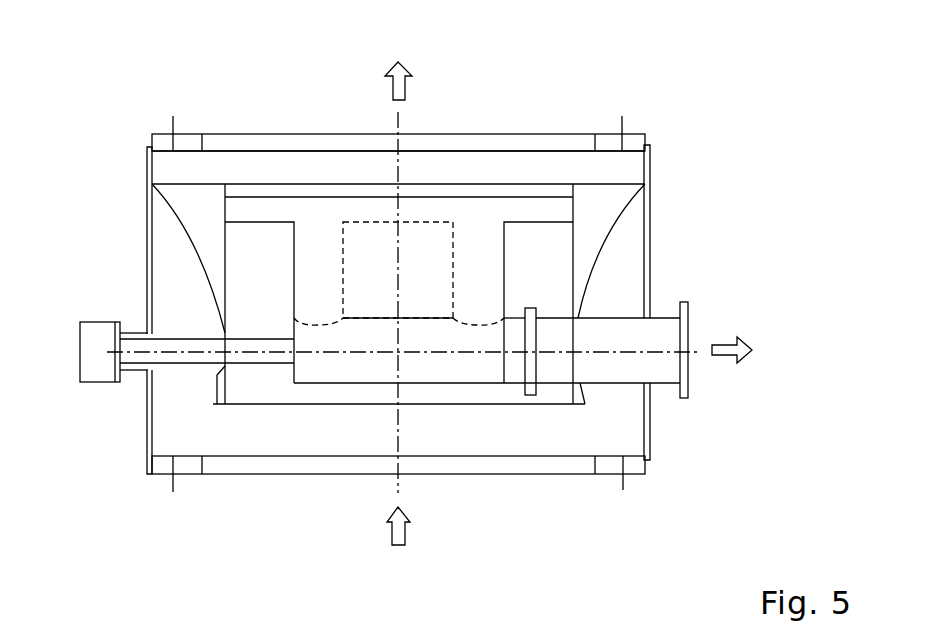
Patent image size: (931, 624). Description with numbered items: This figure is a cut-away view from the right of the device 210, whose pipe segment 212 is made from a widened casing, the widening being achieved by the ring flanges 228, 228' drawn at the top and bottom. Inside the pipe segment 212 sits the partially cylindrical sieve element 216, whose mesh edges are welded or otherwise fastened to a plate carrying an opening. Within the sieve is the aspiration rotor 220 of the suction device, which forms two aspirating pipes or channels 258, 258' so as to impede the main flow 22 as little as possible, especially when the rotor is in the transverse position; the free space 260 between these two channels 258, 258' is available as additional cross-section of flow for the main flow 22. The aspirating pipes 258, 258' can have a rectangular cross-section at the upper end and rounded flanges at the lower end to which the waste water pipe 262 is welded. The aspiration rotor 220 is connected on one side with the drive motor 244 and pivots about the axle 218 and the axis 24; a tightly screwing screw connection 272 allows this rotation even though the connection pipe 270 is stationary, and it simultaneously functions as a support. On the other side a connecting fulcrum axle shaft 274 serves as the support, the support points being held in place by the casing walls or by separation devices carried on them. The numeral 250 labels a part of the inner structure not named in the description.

The device 210 is at (713, 23).
The pipe segment 212 is at (660, 183).
The sieve element 216 is at (715, 240).
The axle 218 is at (247, 355).
The aspiration rotor 220 is at (300, 210).
The ring flange 228 is at (398, 522).
The ring flange 228' is at (398, 102).
The drive motor 244 is at (98, 383).
The top plate 250 is at (237, 192).
The aspirating pipe 258 is at (415, 186).
The aspirating pipe 258' is at (385, 170).
The free space 260 is at (377, 295).
The waste water pipe 262 is at (315, 367).
The connection pipe 270 is at (708, 379).
The screw connection 272 is at (537, 370).
The connecting fulcrum axle shaft 274 is at (306, 427).
The axis 24 is at (397, 493).
The main flow 22 is at (408, 530).